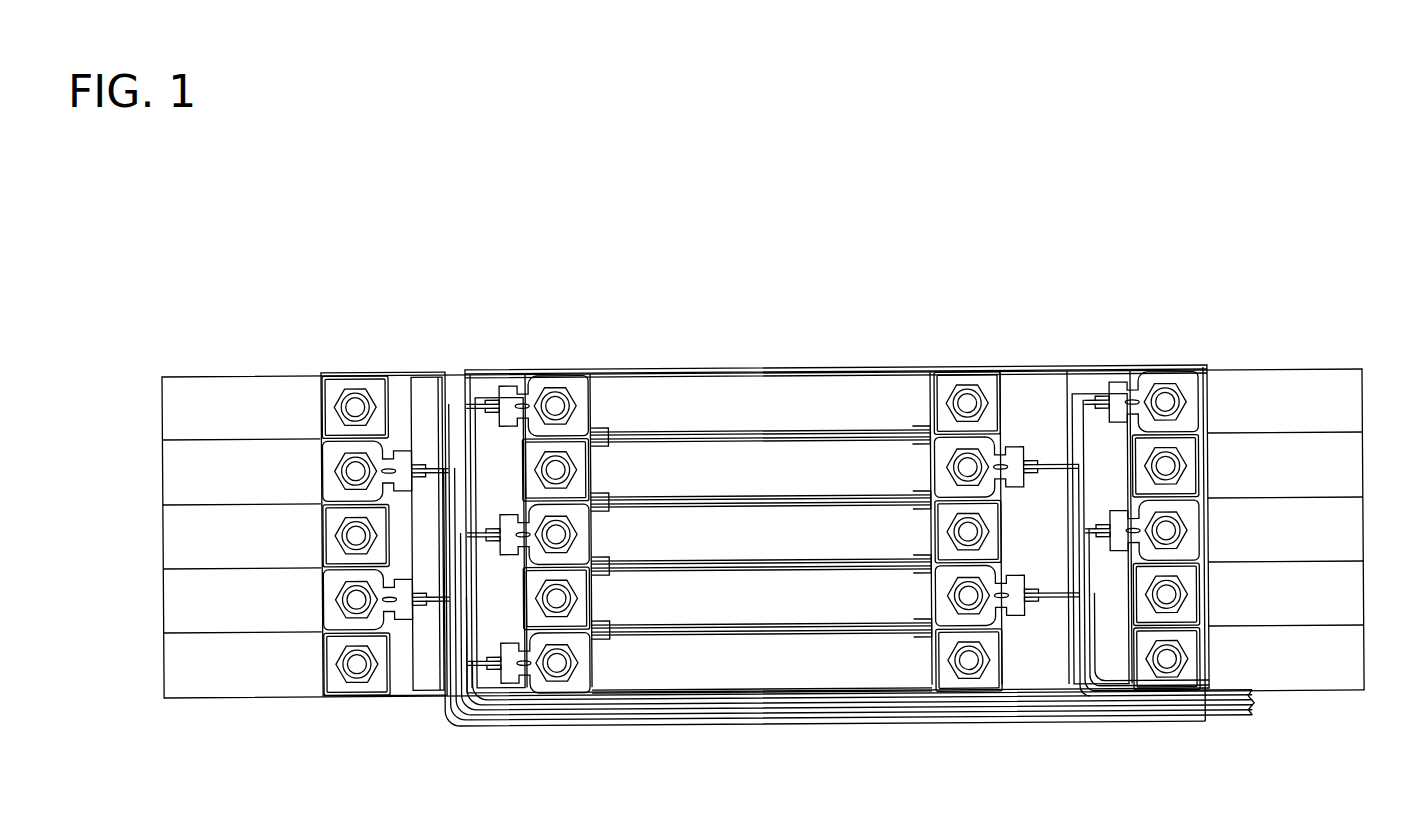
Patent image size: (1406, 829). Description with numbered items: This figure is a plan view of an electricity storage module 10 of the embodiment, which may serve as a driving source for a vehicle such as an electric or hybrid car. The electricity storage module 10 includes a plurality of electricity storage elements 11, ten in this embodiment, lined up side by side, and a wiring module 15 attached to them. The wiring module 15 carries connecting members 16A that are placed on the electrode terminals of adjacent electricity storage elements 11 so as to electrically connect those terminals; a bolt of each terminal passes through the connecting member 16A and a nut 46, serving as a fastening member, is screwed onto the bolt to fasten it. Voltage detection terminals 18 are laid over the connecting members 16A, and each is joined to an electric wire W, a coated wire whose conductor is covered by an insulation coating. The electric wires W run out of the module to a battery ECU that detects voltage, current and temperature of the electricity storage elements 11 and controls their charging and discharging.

The electricity storage module 10 is at (995, 263).
The electricity storage element 11 is at (1346, 670).
The wiring module 15 is at (1268, 398).
The connecting member 16A is at (775, 600).
The voltage detection terminal 18 is at (1112, 534).
The nut 46 is at (945, 668).
The electric wire W is at (1040, 717).